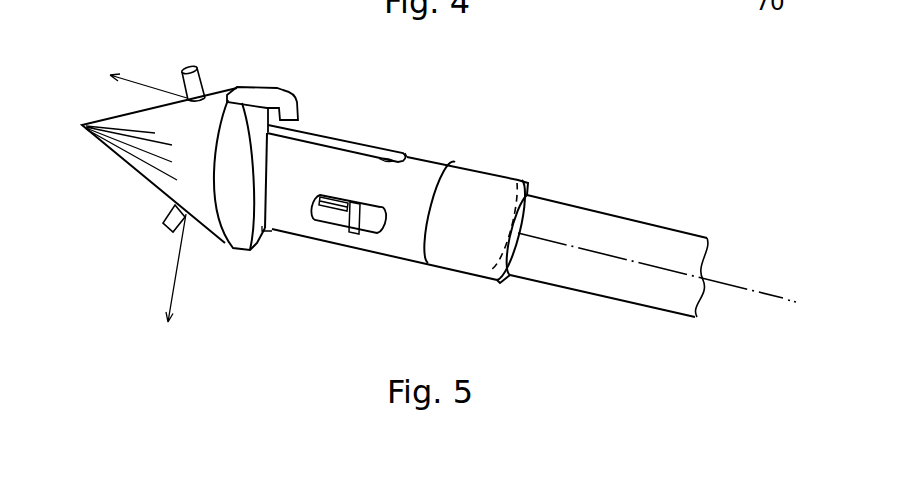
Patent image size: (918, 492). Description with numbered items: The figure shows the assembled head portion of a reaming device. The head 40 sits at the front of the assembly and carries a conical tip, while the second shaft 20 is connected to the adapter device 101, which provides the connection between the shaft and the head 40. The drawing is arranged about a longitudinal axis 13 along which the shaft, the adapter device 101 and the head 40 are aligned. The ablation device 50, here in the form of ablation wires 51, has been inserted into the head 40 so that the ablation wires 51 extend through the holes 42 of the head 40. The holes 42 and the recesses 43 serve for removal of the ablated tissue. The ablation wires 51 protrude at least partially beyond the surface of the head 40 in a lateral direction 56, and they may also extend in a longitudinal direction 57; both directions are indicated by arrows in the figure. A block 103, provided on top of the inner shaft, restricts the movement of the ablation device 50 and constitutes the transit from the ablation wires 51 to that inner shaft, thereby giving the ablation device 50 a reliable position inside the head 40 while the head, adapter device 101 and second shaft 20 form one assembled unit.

The longitudinal axis 13 is at (740, 285).
The second shaft 20 is at (560, 273).
The head 40 is at (148, 178).
The holes 42 is at (209, 92).
The recesses 43 is at (267, 92).
The ablation device 50 is at (337, 212).
The ablation wires 51 is at (320, 255).
The lateral direction 56 is at (178, 285).
The longitudinal direction 57 is at (148, 88).
The adapter device 101 is at (483, 177).
The block 103 is at (355, 213).